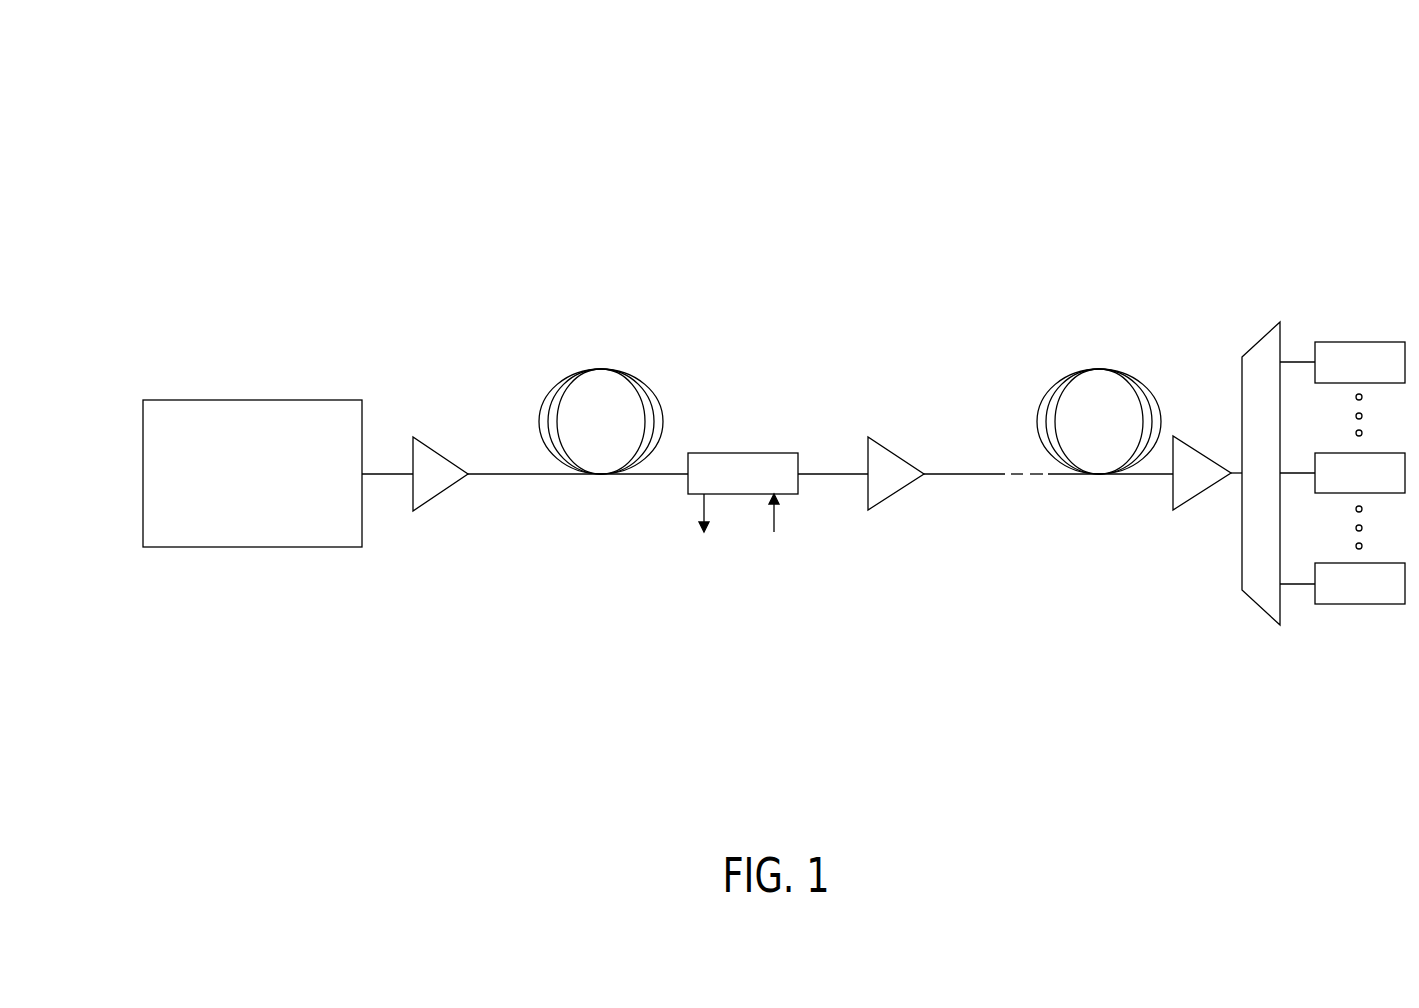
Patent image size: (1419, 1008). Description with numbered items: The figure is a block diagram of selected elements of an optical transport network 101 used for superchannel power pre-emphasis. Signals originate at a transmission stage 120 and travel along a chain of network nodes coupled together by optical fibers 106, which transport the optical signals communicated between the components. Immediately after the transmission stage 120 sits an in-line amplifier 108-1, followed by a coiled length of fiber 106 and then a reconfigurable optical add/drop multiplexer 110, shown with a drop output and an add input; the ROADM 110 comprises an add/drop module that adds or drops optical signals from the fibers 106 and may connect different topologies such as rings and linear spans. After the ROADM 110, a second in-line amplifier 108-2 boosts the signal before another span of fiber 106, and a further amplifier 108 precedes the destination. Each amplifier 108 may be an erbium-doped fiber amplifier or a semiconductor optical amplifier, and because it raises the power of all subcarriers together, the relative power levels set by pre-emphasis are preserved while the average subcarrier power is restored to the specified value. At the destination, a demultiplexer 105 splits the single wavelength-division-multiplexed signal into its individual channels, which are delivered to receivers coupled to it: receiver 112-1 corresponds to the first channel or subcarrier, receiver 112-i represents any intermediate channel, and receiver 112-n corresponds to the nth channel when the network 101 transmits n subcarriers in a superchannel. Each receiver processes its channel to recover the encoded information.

The optical transport network 101 is at (185, 69).
The transmission stage 120 is at (234, 515).
The in-line amplifier 108-1 is at (438, 449).
The in-line amplifier 108-2 is at (890, 449).
The amplifier 108 is at (1202, 448).
The optical fiber 106 is at (624, 370).
The reconfigurable optical add/drop multiplexer 110 is at (723, 453).
The demultiplexer 105 is at (1265, 336).
The receiver 112-1 is at (1376, 342).
The receiver 112-i is at (1387, 453).
The receiver 112-n is at (1378, 604).